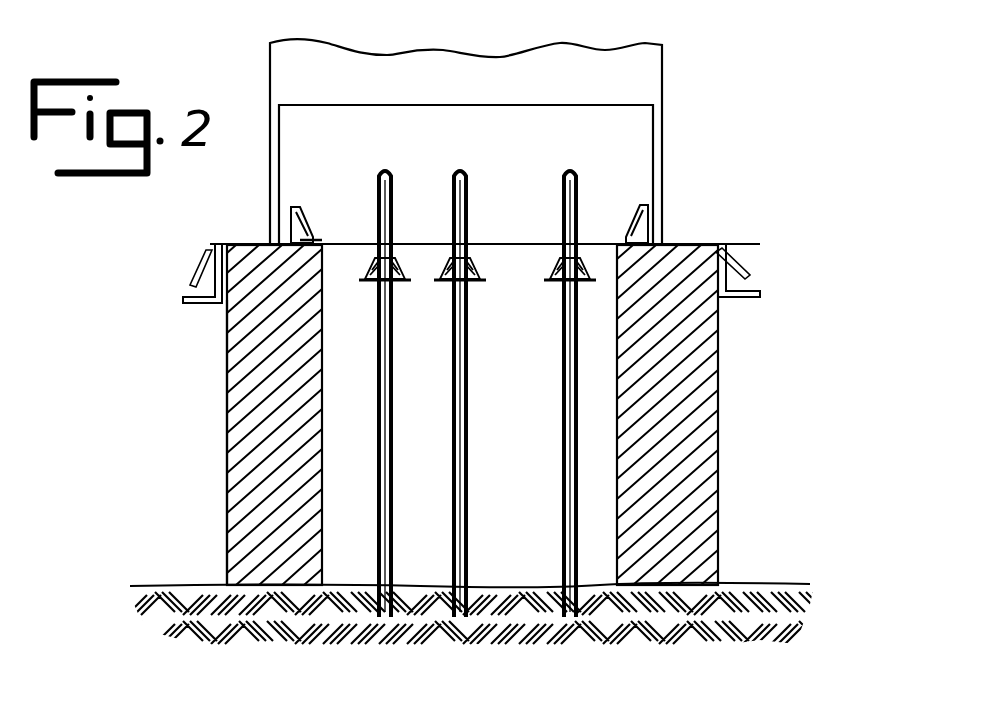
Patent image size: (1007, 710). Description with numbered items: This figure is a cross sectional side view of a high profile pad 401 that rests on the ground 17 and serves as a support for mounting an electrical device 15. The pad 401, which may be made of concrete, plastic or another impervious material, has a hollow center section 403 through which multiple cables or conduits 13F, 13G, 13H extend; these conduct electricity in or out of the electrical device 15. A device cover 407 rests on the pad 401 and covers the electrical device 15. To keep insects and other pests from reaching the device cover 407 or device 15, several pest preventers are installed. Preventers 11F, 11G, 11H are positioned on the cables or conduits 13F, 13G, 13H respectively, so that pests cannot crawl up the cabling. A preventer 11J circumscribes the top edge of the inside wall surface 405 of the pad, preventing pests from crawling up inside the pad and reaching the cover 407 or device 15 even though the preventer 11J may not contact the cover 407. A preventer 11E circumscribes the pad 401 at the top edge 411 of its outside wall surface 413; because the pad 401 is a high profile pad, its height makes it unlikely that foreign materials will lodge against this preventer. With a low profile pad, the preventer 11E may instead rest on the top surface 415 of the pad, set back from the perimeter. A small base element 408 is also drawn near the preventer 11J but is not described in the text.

The electrical device 15 is at (630, 134).
The ground 17 is at (172, 586).
The preventer 11E is at (180, 264).
The preventer 11F is at (400, 298).
The preventer 11G is at (478, 298).
The preventer 11H is at (586, 298).
The preventer 11J is at (312, 196).
The conduit or cabling 13F is at (397, 429).
The conduit or cabling 13G is at (472, 426).
The conduit or cabling 13H is at (578, 470).
The high profile pad 401 is at (246, 453).
The hollow center section 403 is at (604, 440).
The inside wall surface 405 is at (340, 425).
The device cover 407 is at (270, 80).
The bracket base 408 is at (320, 243).
The top edge 411 is at (218, 245).
The outside wall surface 413 is at (227, 396).
The top surface 415 is at (246, 243).